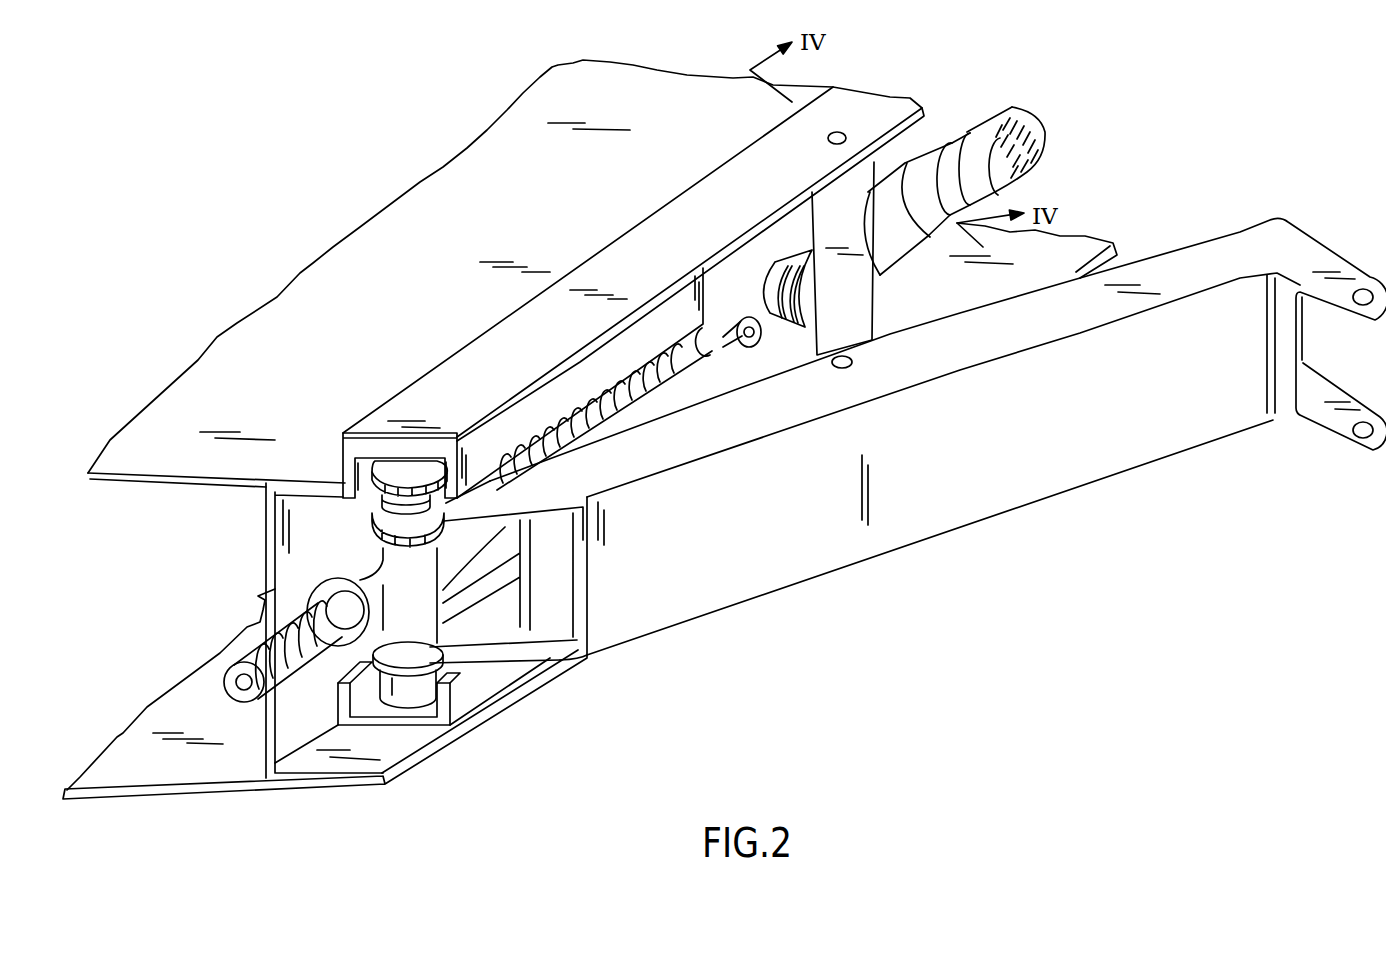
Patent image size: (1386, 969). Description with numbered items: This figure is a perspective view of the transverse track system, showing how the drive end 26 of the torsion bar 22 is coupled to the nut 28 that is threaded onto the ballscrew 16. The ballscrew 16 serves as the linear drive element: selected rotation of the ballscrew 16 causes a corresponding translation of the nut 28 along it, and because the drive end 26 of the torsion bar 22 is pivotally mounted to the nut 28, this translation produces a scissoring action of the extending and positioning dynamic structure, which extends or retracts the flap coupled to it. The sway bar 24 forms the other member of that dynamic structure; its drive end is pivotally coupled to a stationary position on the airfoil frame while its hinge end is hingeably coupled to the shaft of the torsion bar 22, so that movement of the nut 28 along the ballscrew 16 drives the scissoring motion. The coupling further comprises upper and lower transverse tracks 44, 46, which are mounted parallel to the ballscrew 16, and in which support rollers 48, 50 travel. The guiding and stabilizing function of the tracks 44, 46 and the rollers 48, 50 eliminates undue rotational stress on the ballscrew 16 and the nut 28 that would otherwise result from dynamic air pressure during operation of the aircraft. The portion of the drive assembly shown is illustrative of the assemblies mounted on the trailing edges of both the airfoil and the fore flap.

The ballscrew element 16 is at (633, 380).
The torsion bar 22 is at (1105, 468).
The sway bar 24 is at (872, 188).
The drive end 26 is at (540, 488).
The nut 28 is at (368, 573).
The upper transverse track 44 is at (523, 417).
The lower transverse track 46 is at (467, 698).
The support roller 48 is at (368, 490).
The support roller 50 is at (407, 703).